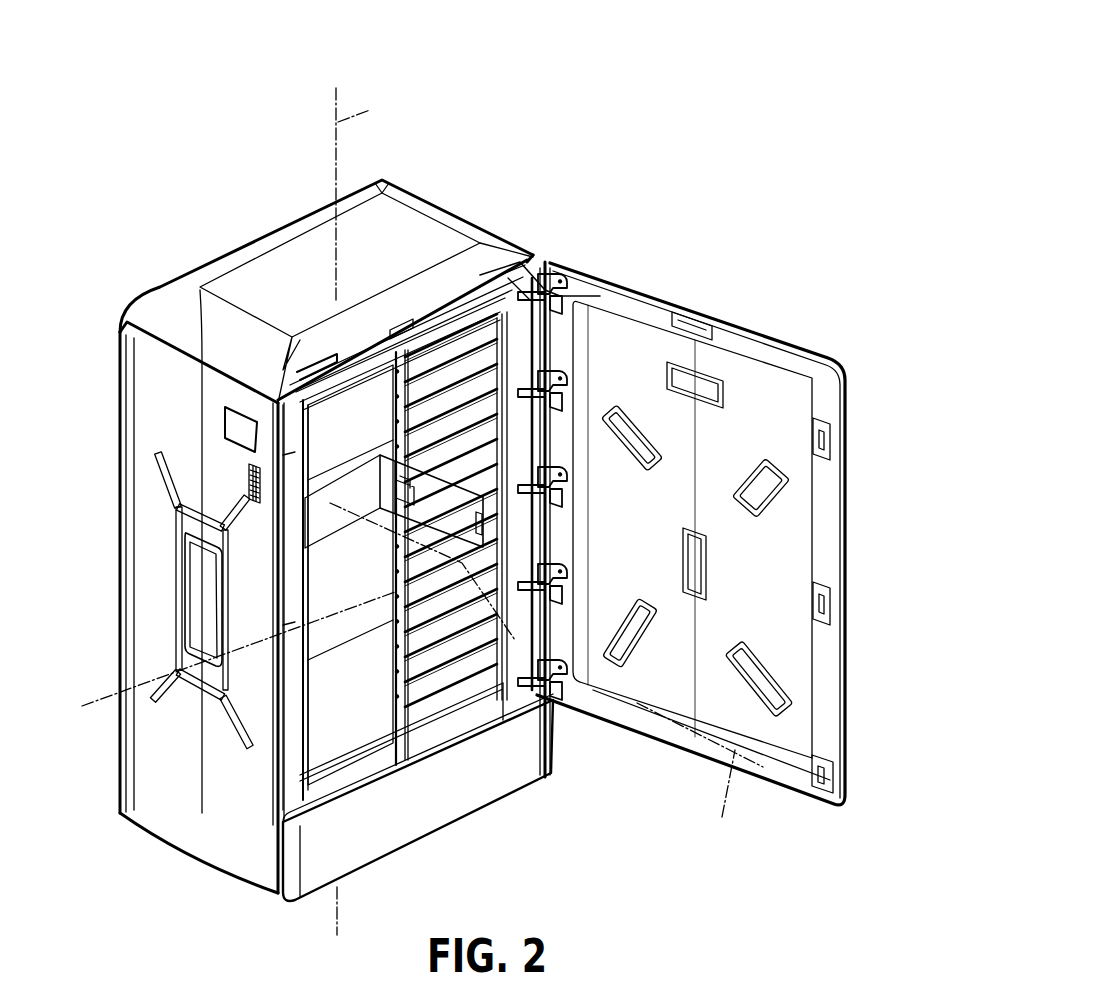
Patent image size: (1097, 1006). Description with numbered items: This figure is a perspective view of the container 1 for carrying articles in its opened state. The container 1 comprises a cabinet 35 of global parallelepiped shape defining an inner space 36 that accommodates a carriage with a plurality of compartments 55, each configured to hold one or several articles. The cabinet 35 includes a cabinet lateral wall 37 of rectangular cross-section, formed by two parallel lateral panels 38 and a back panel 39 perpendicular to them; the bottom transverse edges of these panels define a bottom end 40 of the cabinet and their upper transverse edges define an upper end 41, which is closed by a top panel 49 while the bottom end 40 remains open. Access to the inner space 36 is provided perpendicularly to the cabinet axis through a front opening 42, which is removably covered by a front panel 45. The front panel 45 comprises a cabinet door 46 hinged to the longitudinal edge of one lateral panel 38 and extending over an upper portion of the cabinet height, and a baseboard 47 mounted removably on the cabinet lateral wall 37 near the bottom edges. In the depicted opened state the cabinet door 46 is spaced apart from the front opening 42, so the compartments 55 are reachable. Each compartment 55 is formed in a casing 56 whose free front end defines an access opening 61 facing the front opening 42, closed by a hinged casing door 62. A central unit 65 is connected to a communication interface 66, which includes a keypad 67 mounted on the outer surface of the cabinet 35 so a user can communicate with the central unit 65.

The container 1 is at (622, 79).
The cabinet 35 is at (673, 203).
The inner space 36 is at (517, 357).
The cabinet lateral wall 37 is at (149, 601).
The lateral panels 38 is at (166, 394).
The back panel 39 is at (120, 352).
The bottom end 40 is at (194, 875).
The upper end 41 is at (407, 289).
The front opening 42 is at (522, 280).
The front panel 45 is at (882, 779).
The cabinet door 46 is at (768, 402).
The baseboard 47 is at (480, 788).
The top panel 49 is at (292, 268).
The compartments 55 is at (400, 551).
The casing 56 is at (355, 732).
The access opening 61 is at (322, 524).
The casing door 62 is at (450, 503).
The central unit 65 is at (225, 420).
The communication interface 66 is at (223, 469).
The keypad 67 is at (252, 482).